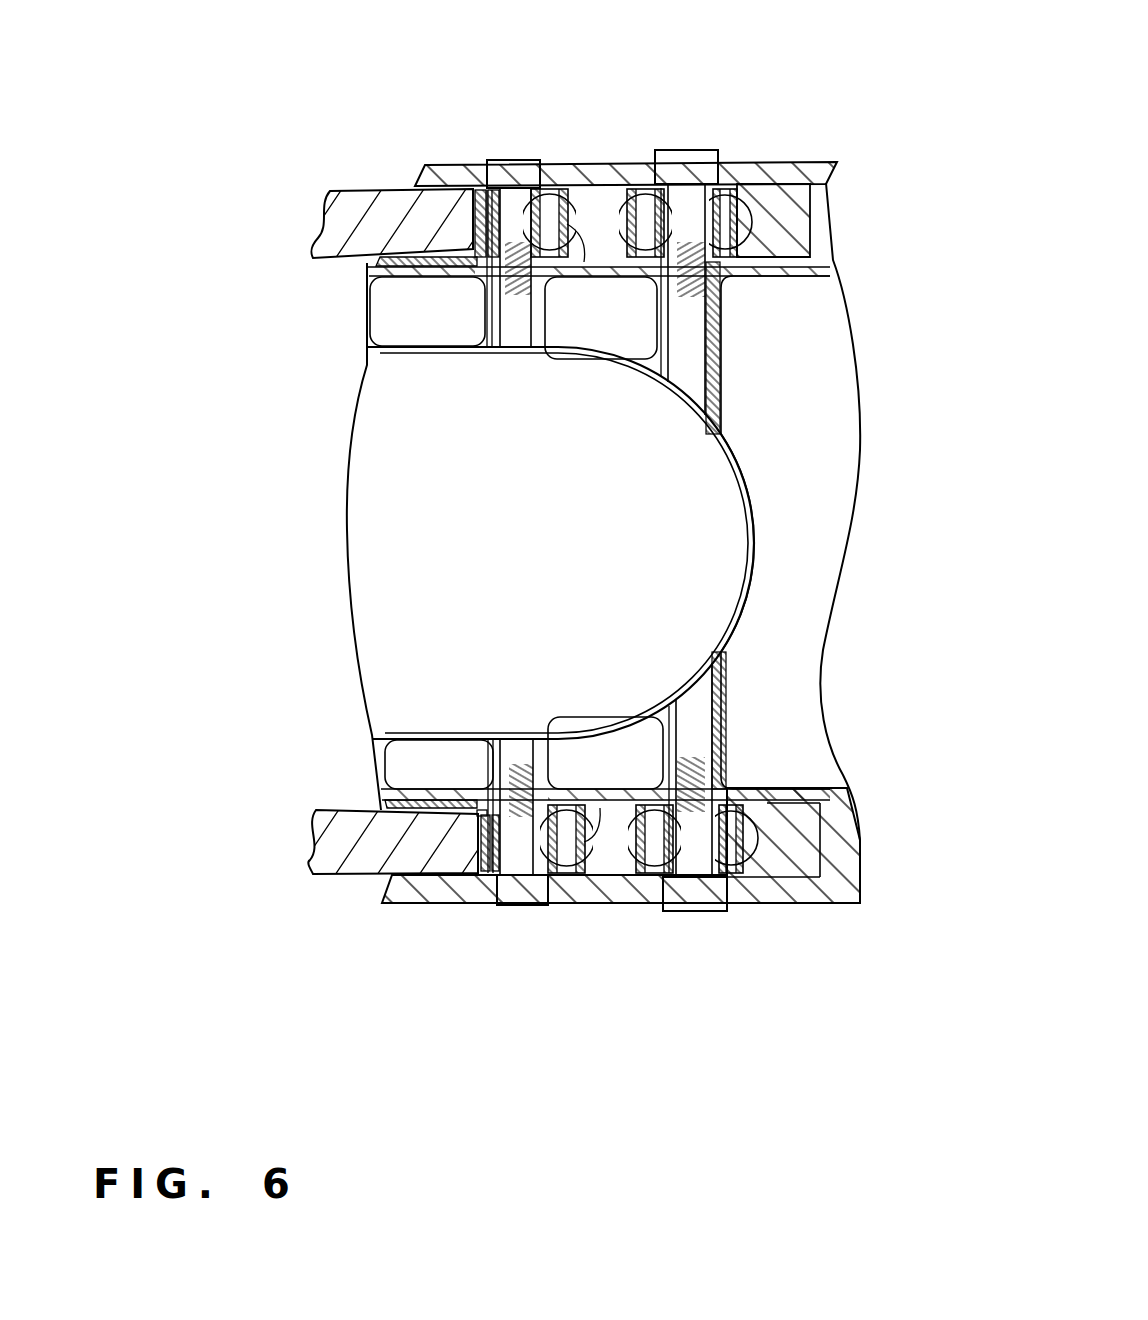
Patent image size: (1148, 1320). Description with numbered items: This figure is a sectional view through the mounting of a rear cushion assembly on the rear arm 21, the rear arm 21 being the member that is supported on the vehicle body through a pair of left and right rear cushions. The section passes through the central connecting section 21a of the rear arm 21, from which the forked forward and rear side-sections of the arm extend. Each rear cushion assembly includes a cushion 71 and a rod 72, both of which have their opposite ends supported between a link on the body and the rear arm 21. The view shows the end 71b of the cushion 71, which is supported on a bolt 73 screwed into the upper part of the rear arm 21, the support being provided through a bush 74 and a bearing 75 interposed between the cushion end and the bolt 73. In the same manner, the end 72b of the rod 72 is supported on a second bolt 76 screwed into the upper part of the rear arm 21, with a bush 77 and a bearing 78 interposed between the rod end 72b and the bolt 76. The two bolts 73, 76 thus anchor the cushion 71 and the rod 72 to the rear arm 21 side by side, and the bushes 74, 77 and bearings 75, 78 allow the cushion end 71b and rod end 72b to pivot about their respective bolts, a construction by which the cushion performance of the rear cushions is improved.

The rear arm 21 is at (655, 543).
The central connecting section 21a is at (818, 492).
The cushion 71 is at (665, 529).
The end of the cushion 71b is at (795, 170).
The rod 72 is at (361, 542).
The end of the rod 72b is at (384, 205).
The bolt 73 is at (688, 168).
The bush 74 is at (645, 186).
The bearing 75 is at (738, 243).
The bolt 76 is at (517, 172).
The bush 77 is at (492, 350).
The bearing 78 is at (592, 347).